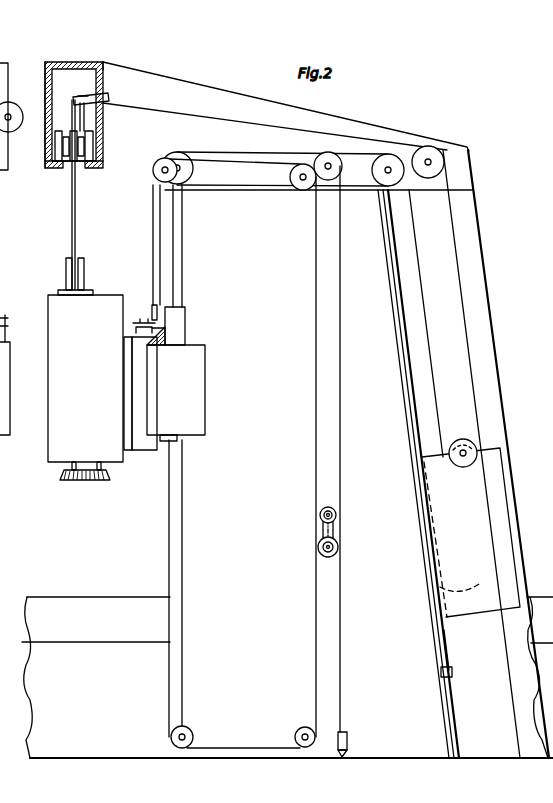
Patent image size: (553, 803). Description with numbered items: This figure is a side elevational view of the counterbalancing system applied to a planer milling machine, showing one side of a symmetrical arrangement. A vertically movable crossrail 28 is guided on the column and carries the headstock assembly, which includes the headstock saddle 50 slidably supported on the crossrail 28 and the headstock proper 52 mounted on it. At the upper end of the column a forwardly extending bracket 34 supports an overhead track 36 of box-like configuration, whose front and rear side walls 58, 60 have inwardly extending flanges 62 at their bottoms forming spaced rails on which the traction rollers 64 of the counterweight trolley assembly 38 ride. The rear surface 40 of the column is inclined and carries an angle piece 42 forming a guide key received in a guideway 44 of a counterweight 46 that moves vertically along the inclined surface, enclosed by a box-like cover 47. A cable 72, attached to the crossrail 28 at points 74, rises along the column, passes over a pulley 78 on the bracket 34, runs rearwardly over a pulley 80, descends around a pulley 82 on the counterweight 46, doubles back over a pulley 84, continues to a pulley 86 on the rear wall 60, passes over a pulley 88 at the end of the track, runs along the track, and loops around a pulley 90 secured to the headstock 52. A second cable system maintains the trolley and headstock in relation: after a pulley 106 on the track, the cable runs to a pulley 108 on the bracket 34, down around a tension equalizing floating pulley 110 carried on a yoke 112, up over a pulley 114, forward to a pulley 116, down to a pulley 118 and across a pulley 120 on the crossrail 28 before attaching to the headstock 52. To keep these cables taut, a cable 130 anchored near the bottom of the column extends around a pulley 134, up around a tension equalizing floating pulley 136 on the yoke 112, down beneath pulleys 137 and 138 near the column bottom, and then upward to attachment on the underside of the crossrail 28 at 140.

The crossrail 28 is at (176, 390).
The forwardly extending bracket 34 is at (173, 78).
The overhead track 36 is at (68, 58).
The trolley assembly 38 is at (49, 151).
The rear surface 40 is at (441, 680).
The angle piece 42 is at (459, 645).
The guideway 44 is at (403, 288).
The counterweight 46 is at (471, 532).
The box-like cover 47 is at (480, 310).
The headstock saddle 50 is at (147, 450).
The headstock proper 52 is at (85, 385).
The front side wall 58 is at (45, 62).
The rear side wall 60 is at (105, 65).
The flanges 62 is at (59, 168).
The traction rollers 64 is at (96, 128).
The cable 72 is at (456, 225).
The attachment points 74 is at (167, 340).
The pulley 78 is at (188, 178).
The pulley 80 is at (390, 158).
The pulley 82 is at (472, 445).
The pulley 84 is at (432, 150).
The pulley 86 is at (109, 100).
The pulley 88 is at (14, 104).
The pulley 90 is at (76, 262).
The pulley 106 is at (90, 98).
The pulley 108 is at (329, 181).
The tension equalizing floating pulley 110 is at (335, 512).
The yoke 112 is at (334, 538).
The pulley 114 is at (300, 186).
The pulley 116 is at (158, 167).
The pulley 118 is at (151, 308).
The pulley 120 is at (140, 323).
The cable 130 is at (342, 680).
The pulley 134 is at (348, 742).
The tension equalizing floating pulley 136 is at (337, 552).
The pulley 137 is at (303, 727).
The pulley 138 is at (172, 735).
The attachment point 140 is at (178, 440).